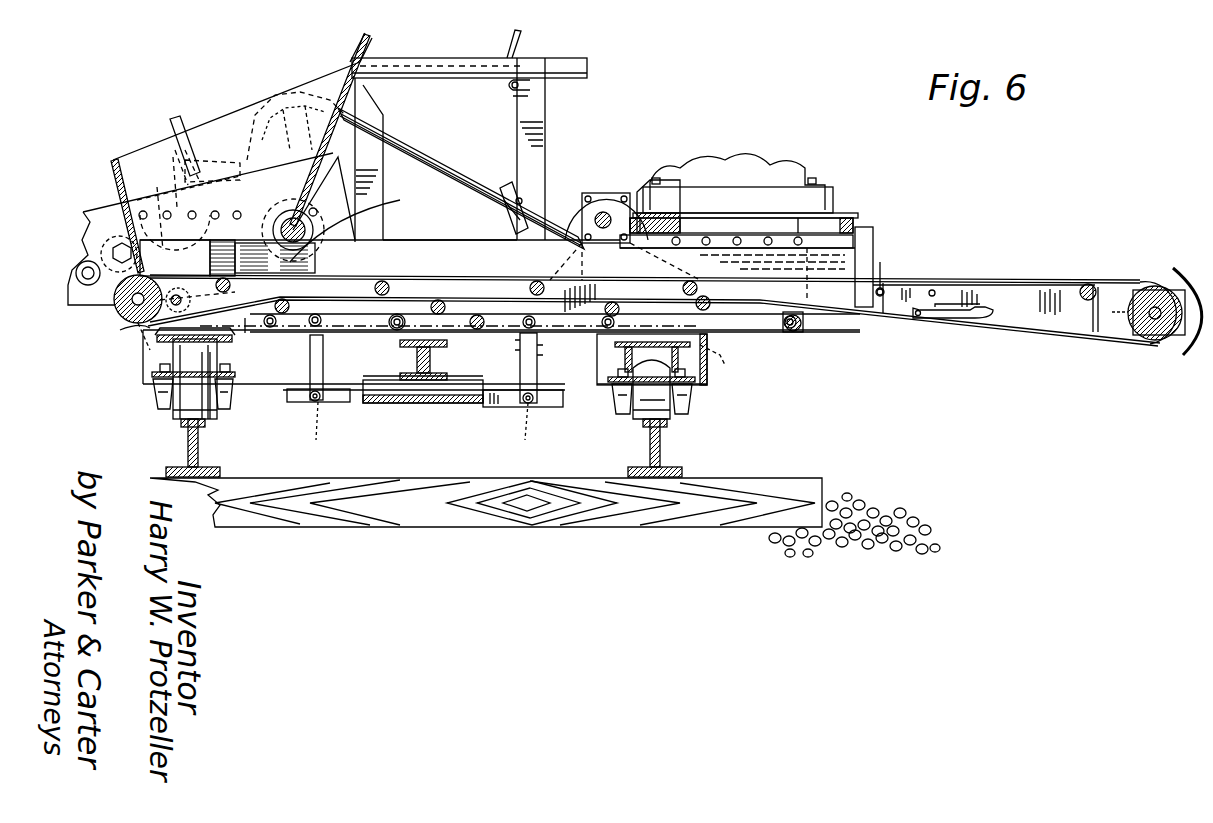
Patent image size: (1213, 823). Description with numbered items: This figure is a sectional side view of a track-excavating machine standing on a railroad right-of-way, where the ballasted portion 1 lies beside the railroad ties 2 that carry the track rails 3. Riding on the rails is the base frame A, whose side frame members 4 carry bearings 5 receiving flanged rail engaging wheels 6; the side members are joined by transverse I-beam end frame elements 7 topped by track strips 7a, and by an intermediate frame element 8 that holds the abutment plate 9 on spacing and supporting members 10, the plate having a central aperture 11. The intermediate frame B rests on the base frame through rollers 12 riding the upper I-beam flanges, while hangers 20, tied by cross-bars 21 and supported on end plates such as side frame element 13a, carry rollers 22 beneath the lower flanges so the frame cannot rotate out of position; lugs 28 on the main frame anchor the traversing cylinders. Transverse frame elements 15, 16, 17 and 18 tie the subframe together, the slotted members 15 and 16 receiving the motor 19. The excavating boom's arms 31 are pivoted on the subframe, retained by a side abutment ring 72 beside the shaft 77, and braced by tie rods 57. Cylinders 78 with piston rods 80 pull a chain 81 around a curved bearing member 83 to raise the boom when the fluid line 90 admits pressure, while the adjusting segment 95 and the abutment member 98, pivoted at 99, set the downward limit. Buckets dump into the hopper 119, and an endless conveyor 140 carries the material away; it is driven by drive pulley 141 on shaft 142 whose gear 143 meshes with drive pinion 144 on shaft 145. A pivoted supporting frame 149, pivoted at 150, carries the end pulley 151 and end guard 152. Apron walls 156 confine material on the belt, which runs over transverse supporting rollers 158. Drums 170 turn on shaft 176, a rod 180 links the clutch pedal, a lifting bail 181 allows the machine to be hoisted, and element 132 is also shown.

The ballasted portion 1 is at (895, 510).
The railroad ties 2 is at (790, 478).
The track rails 3 is at (200, 448).
The side frame members 4 is at (160, 375).
The bearings 5 is at (155, 400).
The flanged rail engaging wheels 6 is at (173, 415).
The transverse end frame elements 7 is at (708, 370).
The track strips 7a is at (721, 352).
The intermediate frame element 8 is at (400, 362).
The abutment plate 9 is at (450, 404).
The spacing and supporting members 10 is at (385, 400).
The central aperture 11 is at (420, 404).
The rollers 12 is at (292, 335).
The side frame element 13a is at (359, 224).
The transverse frame element 15 is at (838, 212).
The transverse frame element 16 is at (655, 205).
The transverse frame element 17 is at (477, 334).
The transverse frame element 18 is at (794, 334).
The motor 19 is at (752, 168).
The hangers 20 is at (538, 360).
The cross-bars 21 is at (494, 410).
The rollers 22 is at (419, 425).
The lugs 28 is at (232, 344).
The arms 31 is at (82, 212).
The tie rods 57 is at (178, 116).
The side abutment ring 72 is at (310, 205).
The shaft 77 is at (324, 196).
The cylinders 78 is at (560, 205).
The piston rods 80 is at (440, 160).
The chain 81 is at (330, 95).
The curved bearing member 83 is at (284, 110).
The fluid line 90 is at (500, 210).
The adjusting segment 95 is at (189, 197).
The adjustable abutment member 98 is at (158, 203).
The pivot 99 is at (113, 250).
The hopper 119 is at (122, 160).
The clip 132 is at (512, 92).
The endless conveyor 140 is at (418, 268).
The drive pulley 141 is at (125, 330).
The shaft 142 is at (120, 315).
The gear 143 is at (148, 340).
The drive pinion 144 is at (227, 258).
The shaft 145 is at (213, 297).
The pivoted supporting frame 149 is at (990, 292).
The pivot 150 is at (880, 300).
The end pulley 151 is at (1140, 340).
The end guard 152 is at (1180, 268).
The apron walls 156 is at (460, 262).
The transverse supporting rollers 158 is at (1090, 284).
The drums 170 is at (606, 186).
The shaft 176 is at (608, 215).
The rod 180 is at (393, 330).
The lifting bail 181 is at (505, 42).
The base frame A is at (273, 398).
The intermediate frame B is at (855, 258).